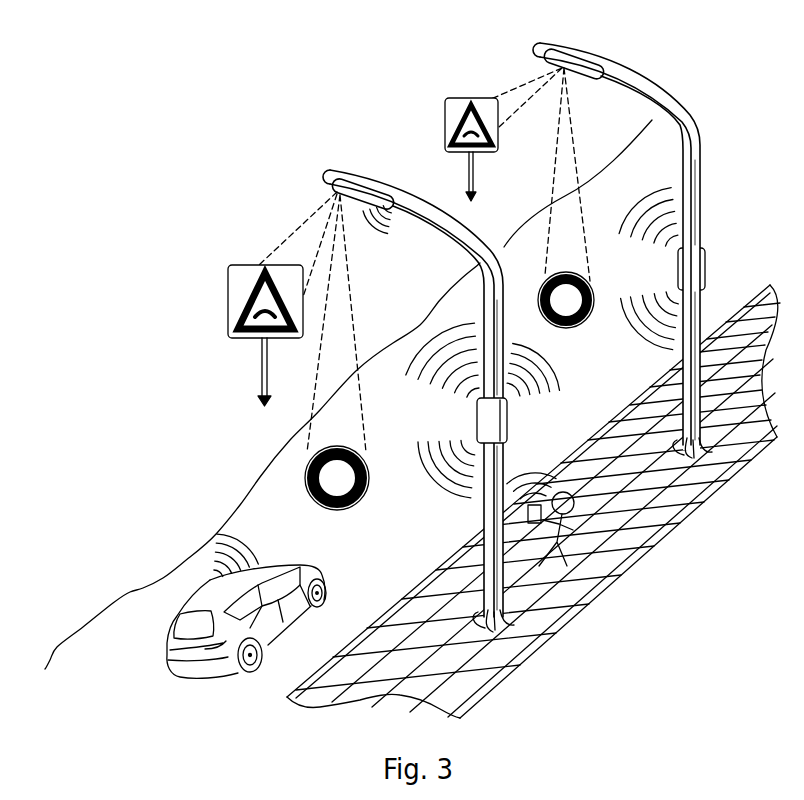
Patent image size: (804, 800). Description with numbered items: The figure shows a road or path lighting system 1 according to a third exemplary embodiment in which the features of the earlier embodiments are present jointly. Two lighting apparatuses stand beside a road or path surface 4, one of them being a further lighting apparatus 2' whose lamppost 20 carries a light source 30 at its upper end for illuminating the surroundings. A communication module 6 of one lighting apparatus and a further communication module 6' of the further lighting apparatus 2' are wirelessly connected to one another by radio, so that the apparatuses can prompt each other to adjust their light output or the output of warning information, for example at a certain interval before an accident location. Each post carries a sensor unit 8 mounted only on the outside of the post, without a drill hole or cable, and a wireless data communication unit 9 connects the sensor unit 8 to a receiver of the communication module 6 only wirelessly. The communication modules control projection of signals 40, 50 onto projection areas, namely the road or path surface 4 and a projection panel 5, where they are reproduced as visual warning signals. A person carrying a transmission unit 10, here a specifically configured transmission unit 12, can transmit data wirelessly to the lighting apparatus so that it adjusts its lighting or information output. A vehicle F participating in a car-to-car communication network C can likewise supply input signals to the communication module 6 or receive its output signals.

The road or path lighting system 1 is at (675, 69).
The further lighting apparatus 2' is at (642, 250).
The road or path surface 4 is at (267, 491).
The projection panel 5 is at (228, 331).
The signal 50 is at (242, 292).
The communication module 6 is at (396, 370).
The further communication module 6' is at (594, 41).
The sensor unit 8 is at (508, 423).
The wireless data communication unit 9 is at (476, 400).
The transmission unit 10 is at (532, 540).
The transmission unit 12 is at (534, 514).
The lamppost 20 is at (592, 322).
The light source 30 is at (337, 478).
The signal 40 is at (586, 327).
The car-to-car communication network C is at (203, 573).
The vehicle F is at (205, 607).